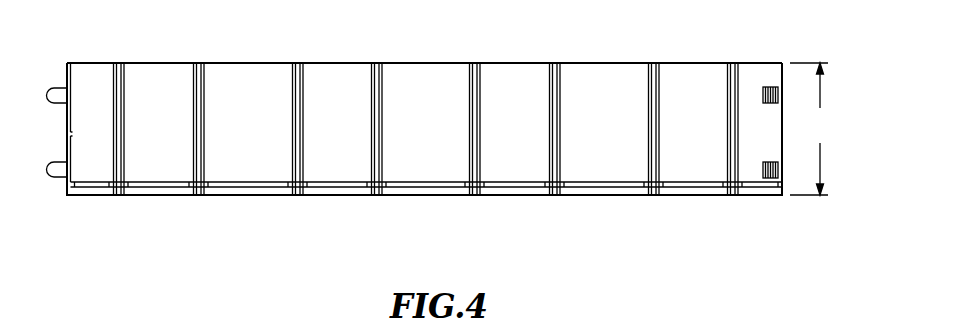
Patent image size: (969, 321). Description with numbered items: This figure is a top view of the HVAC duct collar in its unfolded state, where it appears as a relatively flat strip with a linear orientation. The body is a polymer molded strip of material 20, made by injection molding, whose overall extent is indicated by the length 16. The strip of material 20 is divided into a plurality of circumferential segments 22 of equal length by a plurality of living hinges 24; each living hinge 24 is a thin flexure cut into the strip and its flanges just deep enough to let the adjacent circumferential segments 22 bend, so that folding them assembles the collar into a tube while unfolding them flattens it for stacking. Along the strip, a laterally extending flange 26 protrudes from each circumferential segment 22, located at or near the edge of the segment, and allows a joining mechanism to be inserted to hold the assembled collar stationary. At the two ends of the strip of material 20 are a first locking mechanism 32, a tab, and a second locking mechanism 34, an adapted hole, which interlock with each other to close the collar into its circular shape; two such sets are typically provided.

The length 16 is at (811, 129).
The strip of material 20 is at (92, 90).
The circumferential segments 22 is at (100, 73).
The living hinges 24 is at (118, 197).
The flange 26 is at (95, 188).
The first locking mechanism 32 is at (53, 100).
The second locking mechanism 34 is at (763, 165).